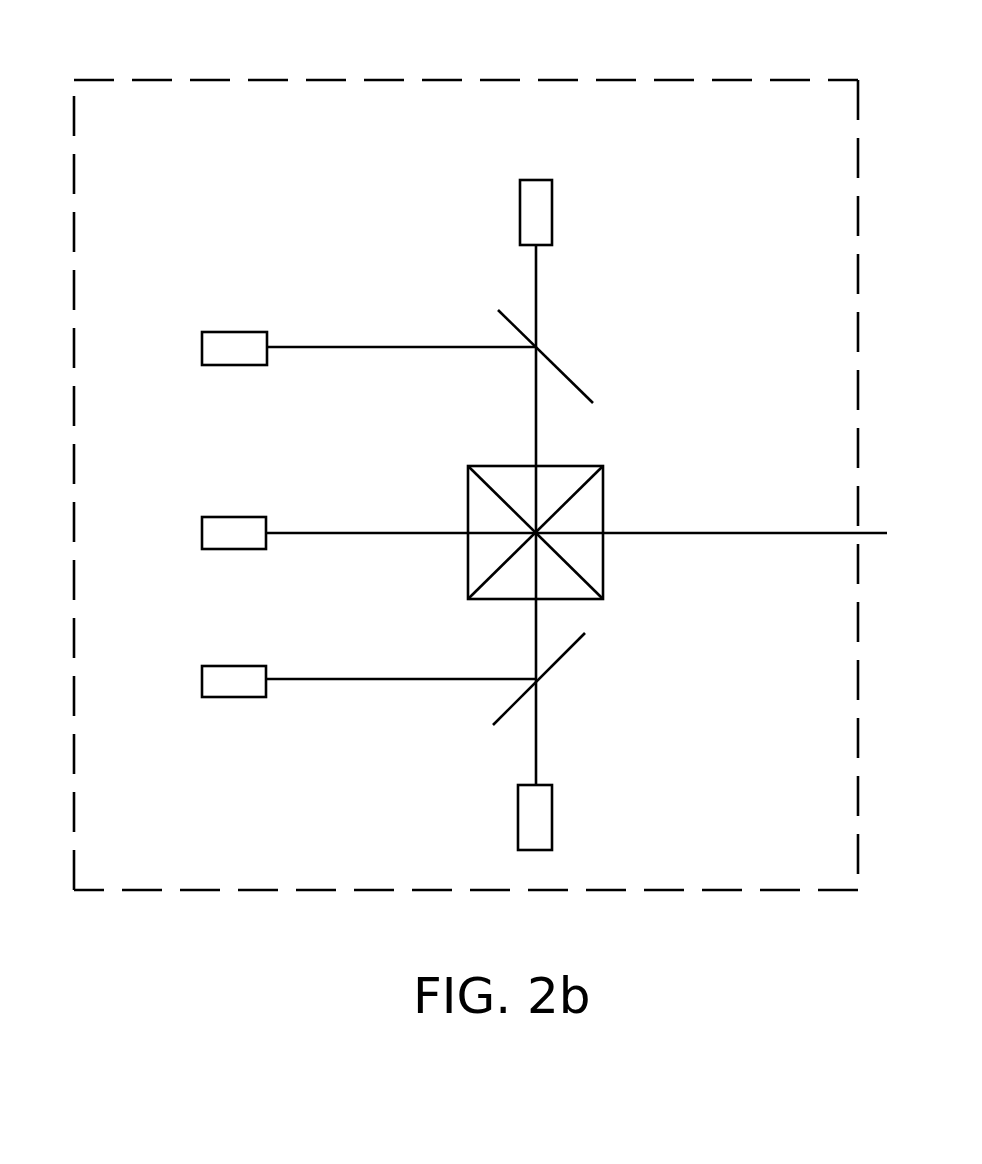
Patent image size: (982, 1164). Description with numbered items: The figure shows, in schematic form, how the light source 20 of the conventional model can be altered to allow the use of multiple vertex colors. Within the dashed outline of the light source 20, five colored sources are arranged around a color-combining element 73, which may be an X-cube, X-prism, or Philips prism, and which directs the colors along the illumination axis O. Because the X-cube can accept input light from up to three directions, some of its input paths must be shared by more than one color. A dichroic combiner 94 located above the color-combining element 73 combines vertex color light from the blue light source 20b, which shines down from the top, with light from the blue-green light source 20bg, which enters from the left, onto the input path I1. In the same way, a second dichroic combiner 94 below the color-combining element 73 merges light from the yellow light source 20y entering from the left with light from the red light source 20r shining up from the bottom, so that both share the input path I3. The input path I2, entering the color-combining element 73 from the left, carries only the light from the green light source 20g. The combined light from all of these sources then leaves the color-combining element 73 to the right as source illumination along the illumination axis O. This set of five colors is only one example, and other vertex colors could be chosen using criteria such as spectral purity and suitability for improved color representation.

The light source 20 is at (480, 80).
The blue light source 20b is at (527, 180).
The blue-green light source 20bg is at (225, 332).
The green light source 20g is at (218, 517).
The yellow light source 20y is at (218, 666).
The red light source 20r is at (518, 824).
The color-combining element 73 is at (478, 466).
The dichroic combiner 94 is at (558, 366).
The input path I1 is at (537, 433).
The input path I2 is at (360, 533).
The input path I3 is at (537, 630).
The illumination axis O is at (728, 533).